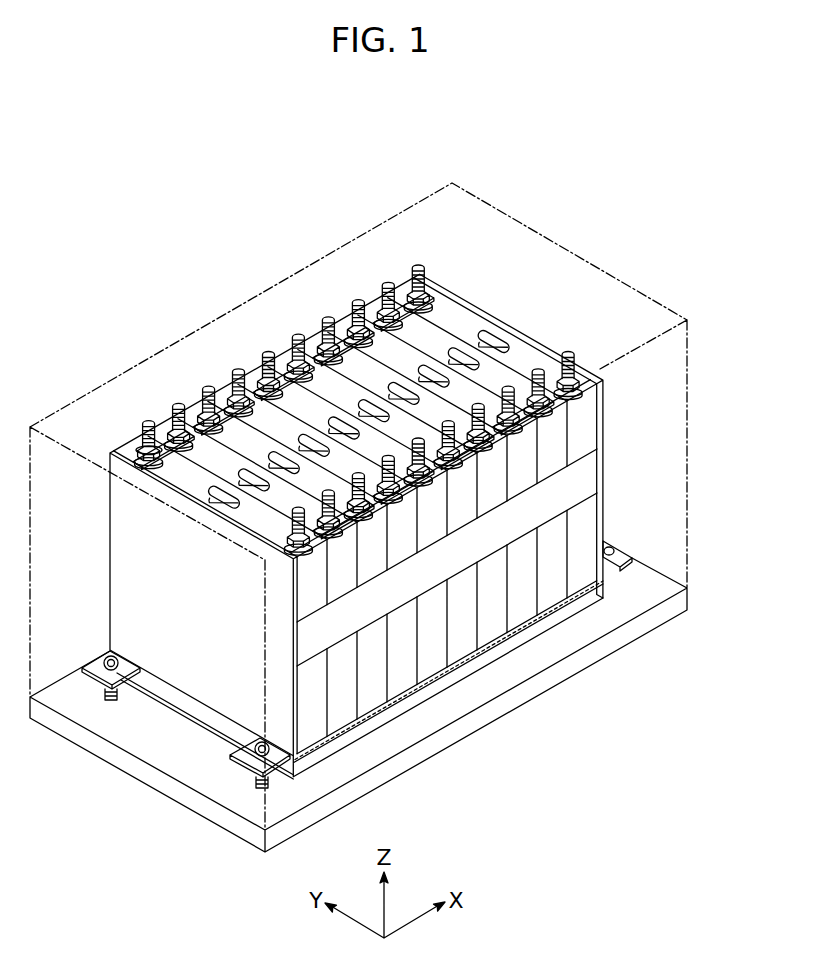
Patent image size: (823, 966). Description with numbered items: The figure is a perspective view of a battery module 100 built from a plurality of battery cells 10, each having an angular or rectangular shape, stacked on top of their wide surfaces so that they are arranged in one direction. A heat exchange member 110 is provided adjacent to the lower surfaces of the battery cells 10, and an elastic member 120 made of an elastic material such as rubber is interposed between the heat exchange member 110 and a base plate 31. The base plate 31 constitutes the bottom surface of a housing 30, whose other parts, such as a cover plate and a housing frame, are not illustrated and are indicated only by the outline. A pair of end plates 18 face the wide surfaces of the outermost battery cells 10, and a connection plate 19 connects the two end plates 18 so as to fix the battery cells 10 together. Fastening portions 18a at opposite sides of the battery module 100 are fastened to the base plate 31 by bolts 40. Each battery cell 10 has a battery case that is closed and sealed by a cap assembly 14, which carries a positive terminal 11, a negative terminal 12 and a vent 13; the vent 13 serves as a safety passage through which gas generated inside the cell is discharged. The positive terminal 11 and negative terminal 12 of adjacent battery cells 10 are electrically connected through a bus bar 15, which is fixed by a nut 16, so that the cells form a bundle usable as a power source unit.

The battery cell 10 is at (535, 605).
The positive terminal 11 is at (422, 266).
The negative terminal 12 is at (569, 352).
The vent 13 is at (490, 333).
The cap assembly 14 is at (522, 355).
The bus bar 15 is at (162, 436).
The nut 16 is at (134, 443).
The end plate 18 is at (616, 511).
The fastening portion 18a is at (238, 753).
The connection plate 19 is at (592, 477).
The housing 30 is at (357, 229).
The base plate 31 is at (544, 692).
The bolt 40 is at (255, 758).
The battery module 100 is at (253, 321).
The heat exchange member 110 is at (403, 703).
The elastic member 120 is at (452, 688).